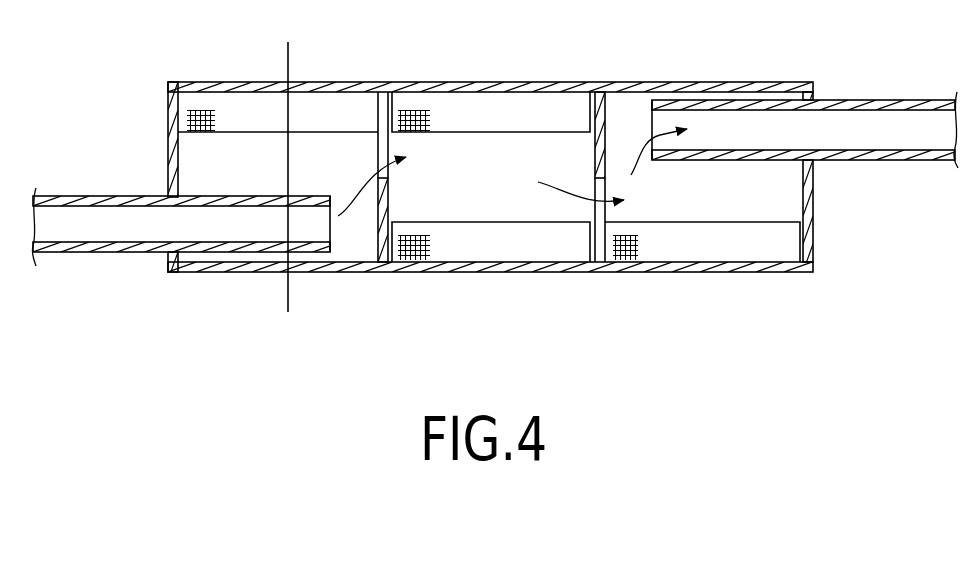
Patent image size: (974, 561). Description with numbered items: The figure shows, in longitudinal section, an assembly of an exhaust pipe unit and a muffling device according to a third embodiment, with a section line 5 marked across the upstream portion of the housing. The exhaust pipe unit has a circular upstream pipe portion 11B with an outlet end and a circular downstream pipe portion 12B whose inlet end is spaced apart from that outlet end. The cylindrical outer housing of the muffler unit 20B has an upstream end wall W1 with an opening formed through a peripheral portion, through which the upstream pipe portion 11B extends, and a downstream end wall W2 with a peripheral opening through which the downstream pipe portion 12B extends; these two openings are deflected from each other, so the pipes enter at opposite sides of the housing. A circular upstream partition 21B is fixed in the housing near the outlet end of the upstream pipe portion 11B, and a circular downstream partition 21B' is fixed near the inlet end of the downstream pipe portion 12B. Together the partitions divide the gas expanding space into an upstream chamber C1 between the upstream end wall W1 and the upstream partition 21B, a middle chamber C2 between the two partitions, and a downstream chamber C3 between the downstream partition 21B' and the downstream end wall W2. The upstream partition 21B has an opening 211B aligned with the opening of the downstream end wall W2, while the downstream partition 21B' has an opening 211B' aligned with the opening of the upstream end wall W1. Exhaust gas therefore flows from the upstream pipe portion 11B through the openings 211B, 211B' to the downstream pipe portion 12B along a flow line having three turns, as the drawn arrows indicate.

The muffler unit 20B is at (572, 41).
The upstream end wall W1 is at (168, 128).
The downstream end wall W2 is at (813, 212).
The upstream pipe portion 11B is at (108, 248).
The downstream pipe portion 12B is at (862, 103).
The upstream partition 21B is at (389, 263).
The opening of the upstream partition 211B is at (395, 126).
The downstream partition 21B' is at (623, 95).
The opening of the downstream partition 211B' is at (590, 254).
The upstream chamber C1 is at (333, 147).
The middle chamber C2 is at (463, 147).
The downstream chamber C3 is at (633, 118).
The section line 5- 5 is at (288, 42).